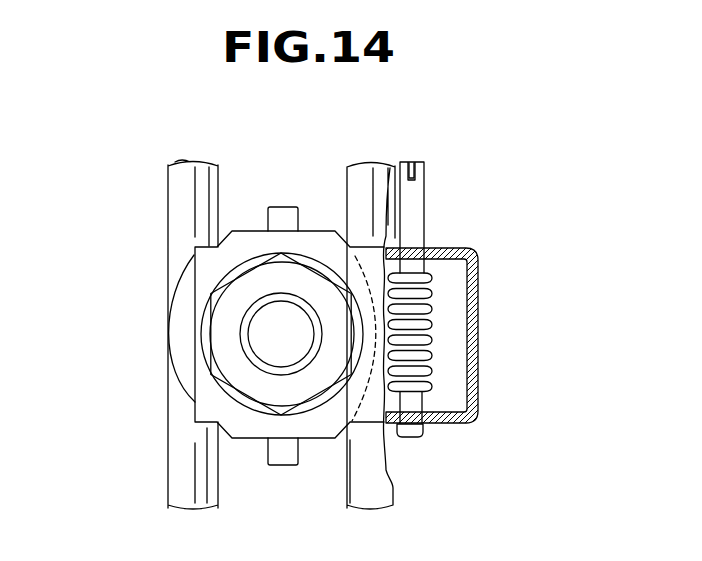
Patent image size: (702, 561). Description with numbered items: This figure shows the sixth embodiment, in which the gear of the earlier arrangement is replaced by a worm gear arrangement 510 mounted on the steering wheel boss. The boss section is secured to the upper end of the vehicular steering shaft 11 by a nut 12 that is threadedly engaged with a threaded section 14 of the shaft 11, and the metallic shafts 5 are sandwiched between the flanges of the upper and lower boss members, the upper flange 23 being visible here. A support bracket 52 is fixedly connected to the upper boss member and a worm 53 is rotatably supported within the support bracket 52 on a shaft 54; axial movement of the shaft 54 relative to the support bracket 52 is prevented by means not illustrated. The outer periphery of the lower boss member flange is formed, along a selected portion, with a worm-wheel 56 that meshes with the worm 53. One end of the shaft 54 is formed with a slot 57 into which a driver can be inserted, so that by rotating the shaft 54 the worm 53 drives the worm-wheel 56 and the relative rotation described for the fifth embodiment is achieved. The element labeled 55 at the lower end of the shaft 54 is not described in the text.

The metallic shafts 5 is at (176, 182).
The support bracket 52 is at (212, 258).
The flange 23 is at (223, 333).
The vehicular steering shaft 11 is at (215, 351).
The threaded section 14 is at (265, 349).
The nut 12 is at (222, 333).
The worm 53 is at (432, 303).
The shaft 54 is at (418, 224).
The slot 57 is at (411, 162).
The worm-wheel 56 is at (400, 334).
The nut 55 is at (408, 438).
The worm gear arrangement 510 is at (500, 337).